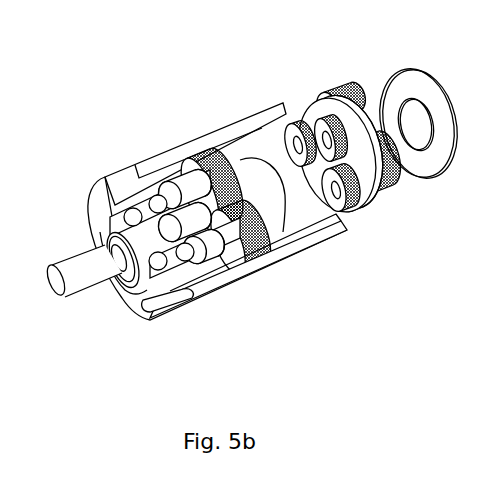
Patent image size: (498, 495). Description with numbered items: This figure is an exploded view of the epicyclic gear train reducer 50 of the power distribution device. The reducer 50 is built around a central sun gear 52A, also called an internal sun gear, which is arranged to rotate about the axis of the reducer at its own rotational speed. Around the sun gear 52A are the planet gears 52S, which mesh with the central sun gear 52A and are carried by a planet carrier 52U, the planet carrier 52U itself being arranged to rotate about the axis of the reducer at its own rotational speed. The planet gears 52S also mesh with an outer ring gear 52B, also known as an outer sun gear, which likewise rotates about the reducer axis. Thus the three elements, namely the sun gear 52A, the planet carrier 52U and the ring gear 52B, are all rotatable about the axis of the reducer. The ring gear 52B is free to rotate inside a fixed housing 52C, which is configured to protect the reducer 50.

The epicyclic gear train reducer 50 is at (131, 101).
The planet gears 52S is at (213, 153).
The planet carrier 52U is at (243, 185).
The sun gear 52A is at (190, 300).
The outer ring gear 52B is at (283, 230).
The fixed housing 52C is at (143, 302).